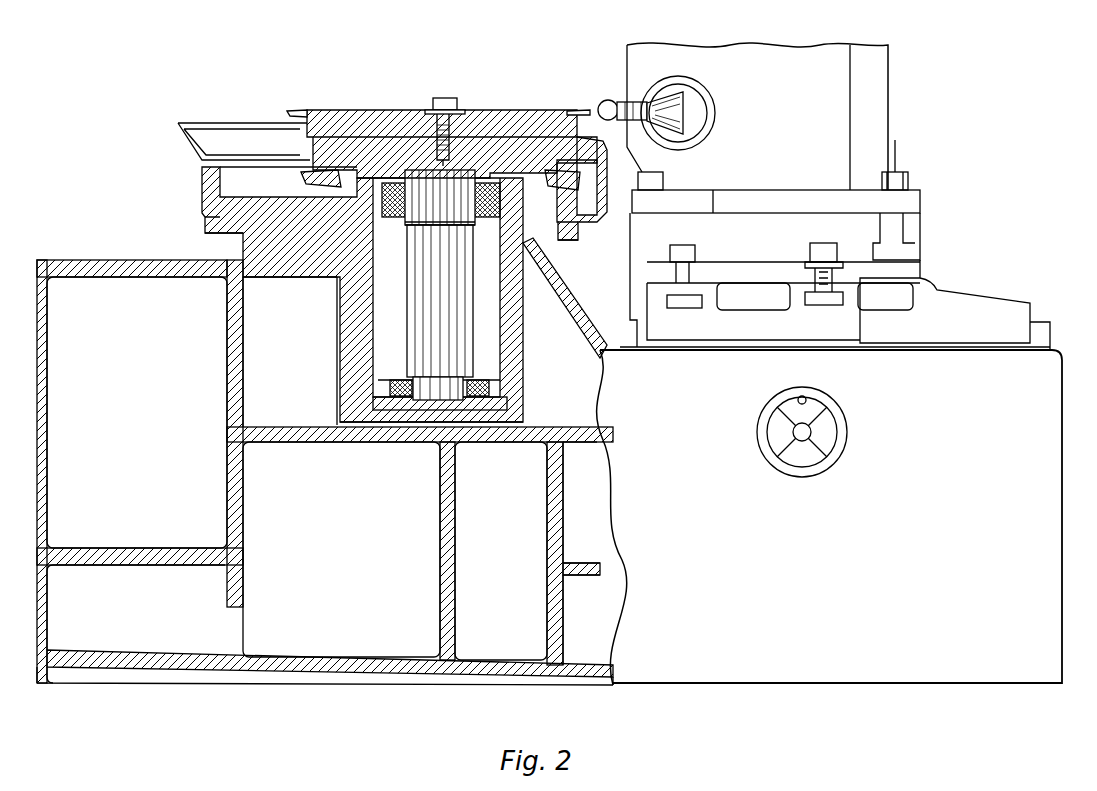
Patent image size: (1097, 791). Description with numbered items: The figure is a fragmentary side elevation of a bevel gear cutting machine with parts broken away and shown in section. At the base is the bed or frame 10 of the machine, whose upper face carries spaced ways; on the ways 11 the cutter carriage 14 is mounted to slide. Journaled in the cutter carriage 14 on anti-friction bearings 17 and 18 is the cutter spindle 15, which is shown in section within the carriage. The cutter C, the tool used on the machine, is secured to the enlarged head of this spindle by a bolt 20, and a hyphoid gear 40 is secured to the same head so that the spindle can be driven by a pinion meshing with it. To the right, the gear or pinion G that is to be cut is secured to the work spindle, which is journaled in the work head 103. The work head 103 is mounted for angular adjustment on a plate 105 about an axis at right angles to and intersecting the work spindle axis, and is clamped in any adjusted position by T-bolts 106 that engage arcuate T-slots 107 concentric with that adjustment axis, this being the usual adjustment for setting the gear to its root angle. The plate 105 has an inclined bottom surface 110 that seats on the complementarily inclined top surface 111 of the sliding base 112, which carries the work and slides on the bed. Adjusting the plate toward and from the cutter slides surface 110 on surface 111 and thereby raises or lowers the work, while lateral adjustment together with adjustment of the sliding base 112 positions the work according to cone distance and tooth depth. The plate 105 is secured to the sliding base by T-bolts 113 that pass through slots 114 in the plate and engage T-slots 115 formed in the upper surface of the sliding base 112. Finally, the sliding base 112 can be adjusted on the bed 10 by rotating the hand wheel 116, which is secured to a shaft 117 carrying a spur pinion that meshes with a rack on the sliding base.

The bed or frame 10 is at (908, 684).
The ways 11 is at (240, 227).
The cutter carriage 14 is at (312, 250).
The cutter spindle 15 is at (411, 322).
The anti-friction bearing 17 is at (490, 392).
The anti-friction bearing 18 is at (493, 214).
The bolt 20 is at (446, 97).
The hyphoid gear 40 is at (300, 176).
The cutter C is at (522, 118).
The gear or pinion G is at (613, 100).
The work head 103 is at (877, 112).
The plate 105 is at (917, 224).
The T-bolts 106 is at (908, 182).
The arcuate T-slots 107 is at (900, 250).
The bottom surface 110 is at (755, 290).
The top surface 111 is at (705, 280).
The sliding base 112 is at (998, 302).
The T-bolts 113 is at (822, 244).
The slots 114 is at (839, 275).
The T-slots 115 is at (828, 306).
The hand wheel 116 is at (830, 415).
The shaft 117 is at (776, 441).